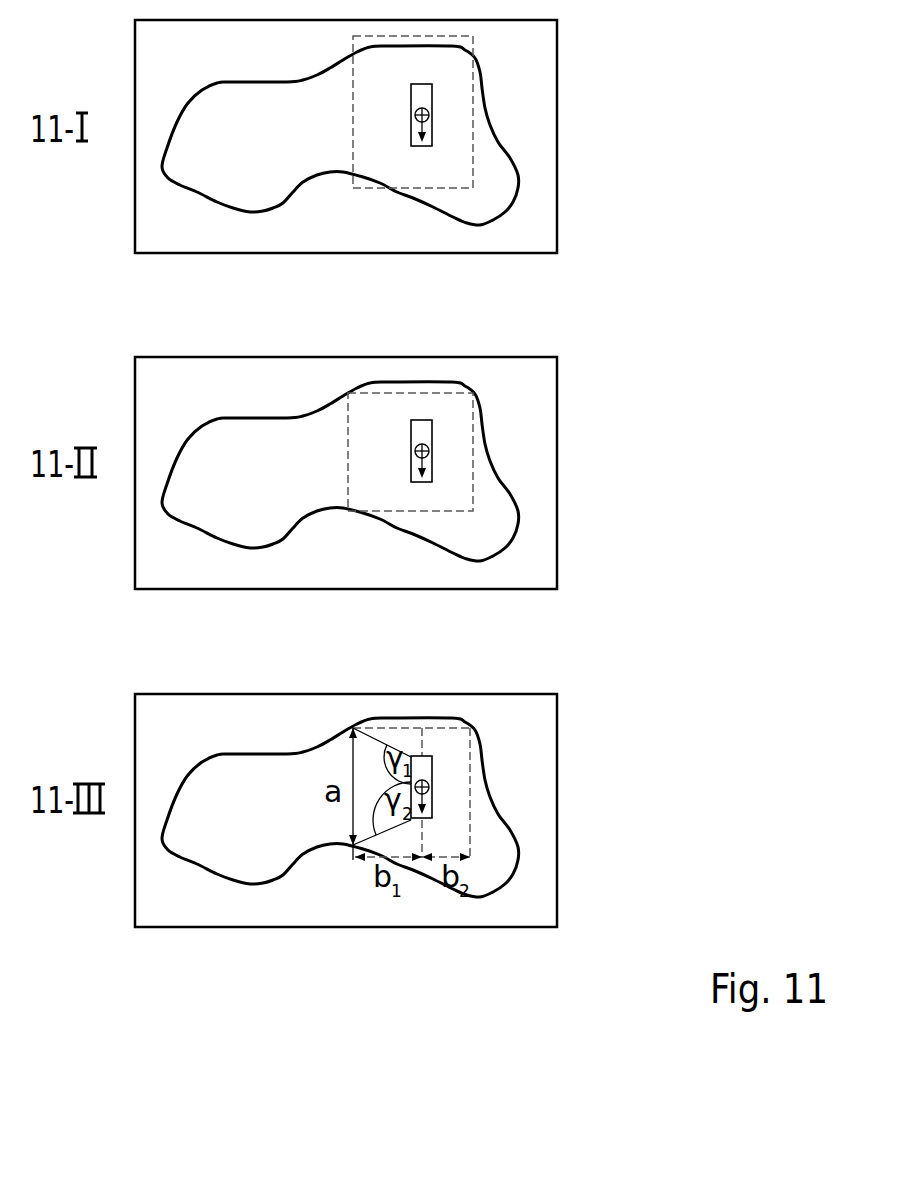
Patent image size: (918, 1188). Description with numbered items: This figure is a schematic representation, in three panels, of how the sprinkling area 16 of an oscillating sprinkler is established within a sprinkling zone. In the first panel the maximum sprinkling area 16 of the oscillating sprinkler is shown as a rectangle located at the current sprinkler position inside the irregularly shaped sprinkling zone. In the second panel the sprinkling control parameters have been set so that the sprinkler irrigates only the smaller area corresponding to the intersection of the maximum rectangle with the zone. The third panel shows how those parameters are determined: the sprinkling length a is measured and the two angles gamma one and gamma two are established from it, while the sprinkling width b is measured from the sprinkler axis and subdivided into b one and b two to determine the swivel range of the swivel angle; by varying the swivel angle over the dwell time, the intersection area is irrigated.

The sprinkling area 16 is at (503, 110).